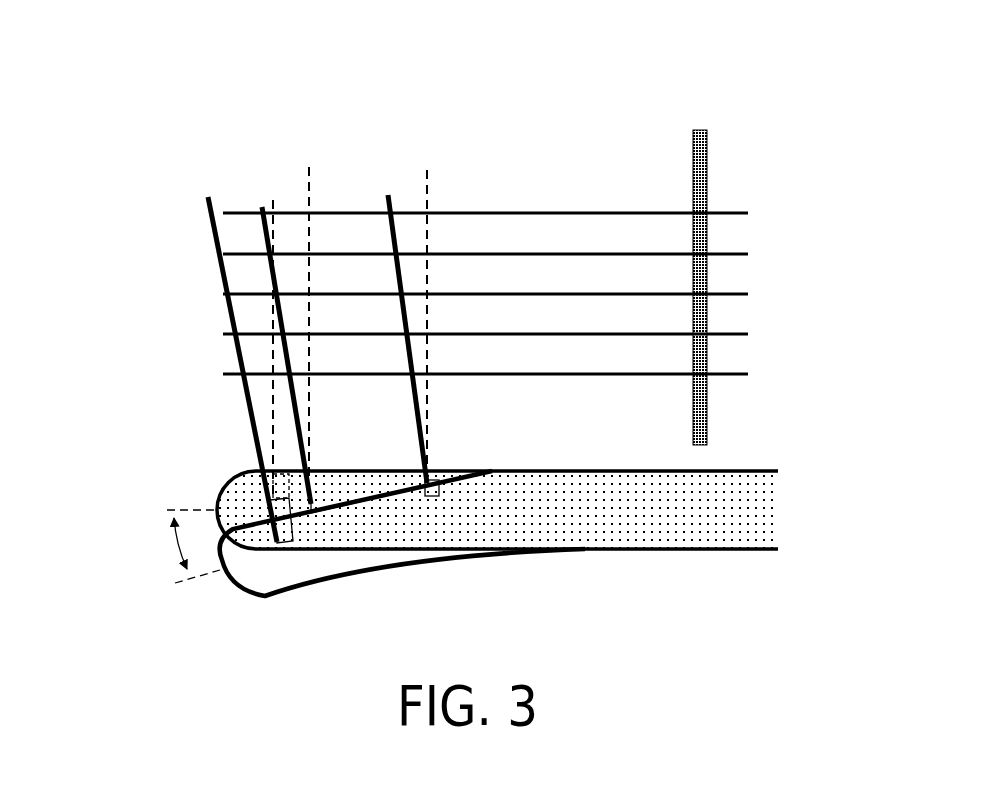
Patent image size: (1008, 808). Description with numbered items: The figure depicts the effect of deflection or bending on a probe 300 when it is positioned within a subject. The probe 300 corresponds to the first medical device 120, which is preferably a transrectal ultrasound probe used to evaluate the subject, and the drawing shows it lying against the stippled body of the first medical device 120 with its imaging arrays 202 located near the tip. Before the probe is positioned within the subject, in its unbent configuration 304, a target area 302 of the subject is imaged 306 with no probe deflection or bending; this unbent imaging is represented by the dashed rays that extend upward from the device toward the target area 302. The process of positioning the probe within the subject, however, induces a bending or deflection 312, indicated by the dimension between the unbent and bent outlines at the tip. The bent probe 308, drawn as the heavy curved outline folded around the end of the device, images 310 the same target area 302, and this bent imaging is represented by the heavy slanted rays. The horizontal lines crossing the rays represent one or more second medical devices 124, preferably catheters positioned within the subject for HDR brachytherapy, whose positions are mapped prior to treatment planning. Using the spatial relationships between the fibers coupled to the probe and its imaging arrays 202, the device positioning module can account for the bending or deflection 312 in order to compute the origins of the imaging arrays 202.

The probe 300 is at (136, 114).
The images of bent probe 310 is at (388, 195).
The images of unbent probe 306 is at (273, 200).
The second medical device 124 is at (570, 199).
The target area 302 is at (204, 355).
The unbent configuration 304 is at (208, 479).
The bending/deflection 312 is at (172, 547).
The bent probe 308 is at (230, 603).
The imaging arrays 202 is at (367, 513).
The first medical device 120 is at (772, 509).